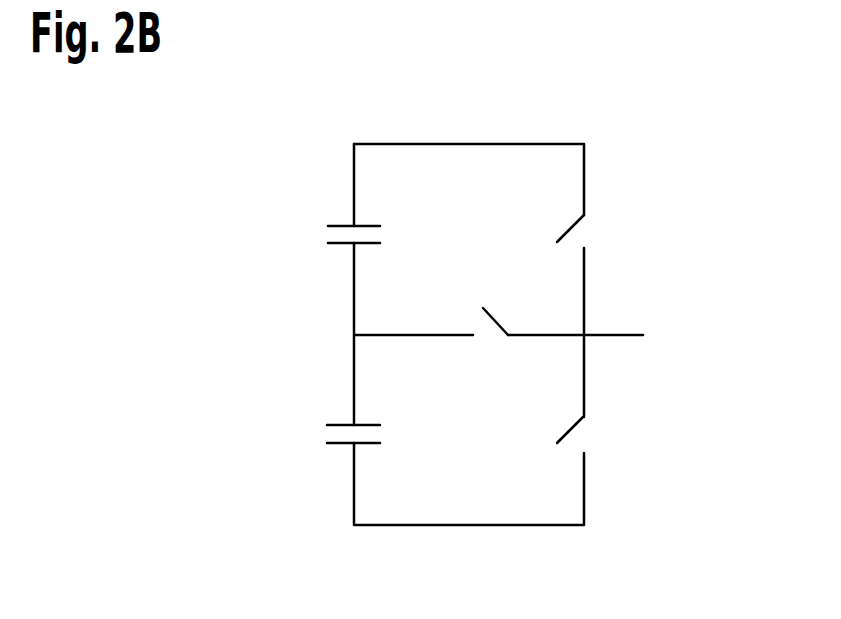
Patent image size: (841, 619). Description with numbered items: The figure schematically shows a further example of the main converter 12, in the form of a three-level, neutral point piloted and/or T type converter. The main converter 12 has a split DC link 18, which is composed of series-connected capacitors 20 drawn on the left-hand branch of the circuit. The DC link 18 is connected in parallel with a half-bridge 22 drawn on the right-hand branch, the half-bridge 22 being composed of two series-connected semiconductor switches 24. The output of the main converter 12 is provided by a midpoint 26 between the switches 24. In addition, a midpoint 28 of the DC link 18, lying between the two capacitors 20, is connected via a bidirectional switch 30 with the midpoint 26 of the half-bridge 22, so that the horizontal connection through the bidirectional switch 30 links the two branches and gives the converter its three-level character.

The main converter 12 is at (657, 128).
The DC link 18 is at (280, 539).
The capacitors 20 is at (343, 224).
The half-bridge 22 is at (657, 540).
The semiconductor switches 24 is at (570, 229).
The midpoint of the half-bridge 26 is at (617, 333).
The midpoint of the DC link 28 is at (355, 335).
The bidirectional switch 30 is at (491, 320).